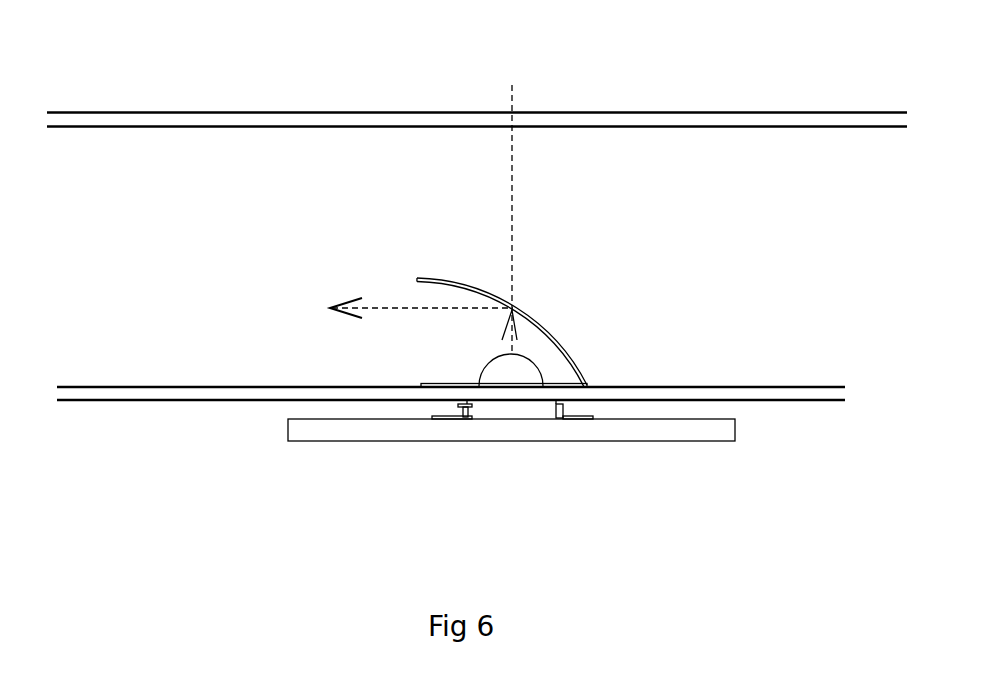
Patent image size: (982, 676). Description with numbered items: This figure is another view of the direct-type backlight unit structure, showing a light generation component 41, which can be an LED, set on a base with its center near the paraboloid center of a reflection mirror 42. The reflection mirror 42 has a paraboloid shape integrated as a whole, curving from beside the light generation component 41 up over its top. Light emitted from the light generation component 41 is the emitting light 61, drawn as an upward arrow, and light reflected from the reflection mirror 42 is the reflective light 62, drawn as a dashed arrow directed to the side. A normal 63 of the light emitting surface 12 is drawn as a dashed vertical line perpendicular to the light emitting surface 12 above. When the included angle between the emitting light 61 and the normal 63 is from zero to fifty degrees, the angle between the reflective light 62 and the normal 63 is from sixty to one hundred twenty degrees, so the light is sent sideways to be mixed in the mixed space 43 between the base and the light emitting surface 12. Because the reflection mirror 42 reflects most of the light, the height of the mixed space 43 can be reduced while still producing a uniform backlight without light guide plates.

The light emitting surface 12 is at (346, 122).
The mixed space 43 is at (178, 238).
The normal 63 is at (513, 200).
The reflective light 62 is at (417, 308).
The reflection mirror 42 is at (548, 333).
The emitting light 61 is at (512, 345).
The light generation component 41 is at (512, 352).